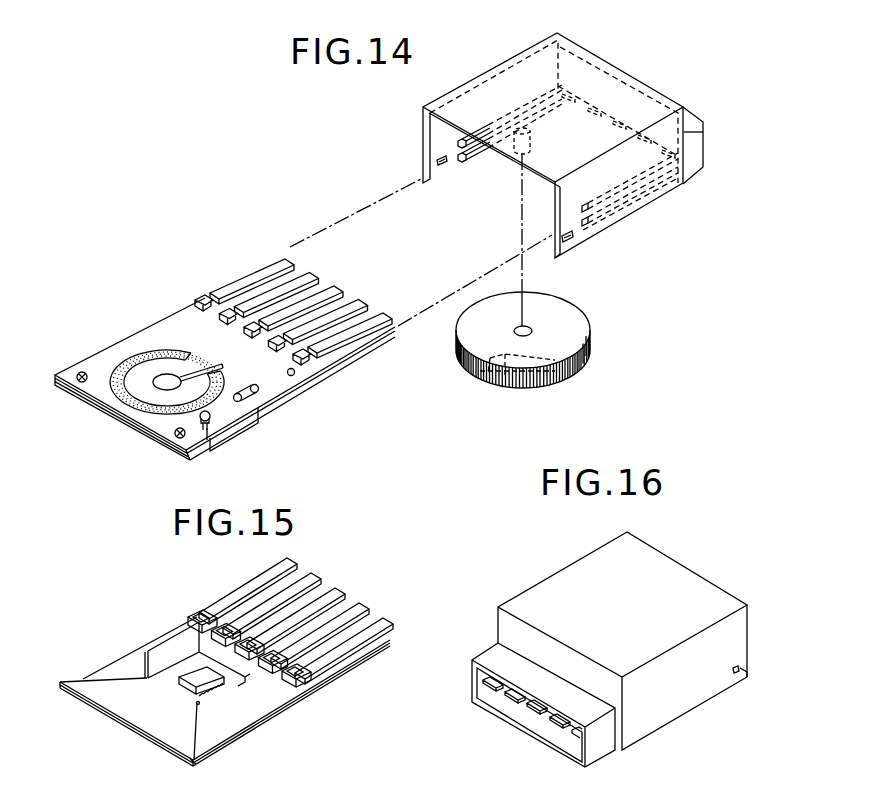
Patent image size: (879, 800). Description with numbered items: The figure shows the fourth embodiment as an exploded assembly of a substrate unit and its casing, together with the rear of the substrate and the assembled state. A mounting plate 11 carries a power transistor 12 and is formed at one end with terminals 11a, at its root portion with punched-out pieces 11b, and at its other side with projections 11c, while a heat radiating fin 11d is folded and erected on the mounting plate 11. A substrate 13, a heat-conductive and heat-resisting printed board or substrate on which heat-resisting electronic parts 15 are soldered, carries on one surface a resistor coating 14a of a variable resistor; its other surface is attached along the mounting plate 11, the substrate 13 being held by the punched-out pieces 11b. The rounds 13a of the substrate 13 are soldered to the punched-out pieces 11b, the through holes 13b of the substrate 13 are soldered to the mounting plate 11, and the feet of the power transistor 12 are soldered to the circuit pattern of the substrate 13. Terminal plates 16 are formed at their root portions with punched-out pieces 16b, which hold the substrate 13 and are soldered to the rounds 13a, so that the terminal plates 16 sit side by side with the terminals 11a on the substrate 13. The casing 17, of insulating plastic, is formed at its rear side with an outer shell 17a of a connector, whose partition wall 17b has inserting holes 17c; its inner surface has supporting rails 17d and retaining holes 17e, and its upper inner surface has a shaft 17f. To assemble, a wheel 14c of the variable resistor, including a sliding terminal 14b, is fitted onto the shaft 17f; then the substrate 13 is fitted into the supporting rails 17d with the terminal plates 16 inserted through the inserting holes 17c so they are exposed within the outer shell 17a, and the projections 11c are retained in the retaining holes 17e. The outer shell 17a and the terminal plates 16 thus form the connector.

In FIG. 15, the mounting plate 11 is at (63, 680).
In FIG. 14, the terminals 11a is at (335, 293).
In FIG. 15, the terminals 11a is at (326, 600).
In FIG. 16, the terminals 11a is at (515, 702).
In FIG. 14, the punched-out pieces 11b is at (250, 330).
In FIG. 14, the projections 11c is at (56, 382).
In FIG. 15, the projections 11c is at (196, 763).
In FIG. 16, the projections 11c is at (741, 668).
In FIG. 14, the heat radiating fin 11d is at (242, 432).
In FIG. 15, the heat radiating fin 11d is at (175, 650).
In FIG. 15, the power transistor 12 is at (208, 682).
In FIG. 15, the substrate 13 is at (130, 662).
In FIG. 14, the rounds 13a is at (294, 375).
In FIG. 14, the through holes 13b is at (80, 372).
In FIG. 14, the resistor coating 14a is at (172, 352).
In FIG. 14, the sliding terminal 14b is at (587, 369).
In FIG. 14, the wheel 14c is at (568, 315).
In FIG. 14, the electronic parts 15 is at (255, 396).
In FIG. 14, the terminal plates 16 is at (380, 320).
In FIG. 15, the terminal plates 16 is at (356, 610).
In FIG. 16, the terminal plates 16 is at (560, 724).
In FIG. 14, the punched-out pieces 16b is at (302, 364).
In FIG. 14, the casing 17 is at (588, 47).
In FIG. 16, the casing 17 is at (584, 555).
In FIG. 14, the outer shell 17a is at (706, 143).
In FIG. 16, the outer shell 17a is at (600, 740).
In FIG. 14, the partition wall 17b is at (604, 78).
In FIG. 14, the inserting holes 17c is at (617, 120).
In FIG. 14, the supporting rails 17d is at (470, 164).
In FIG. 14, the retaining holes 17e is at (440, 168).
In FIG. 16, the retaining holes 17e is at (729, 671).
In FIG. 14, the shaft 17f is at (519, 129).